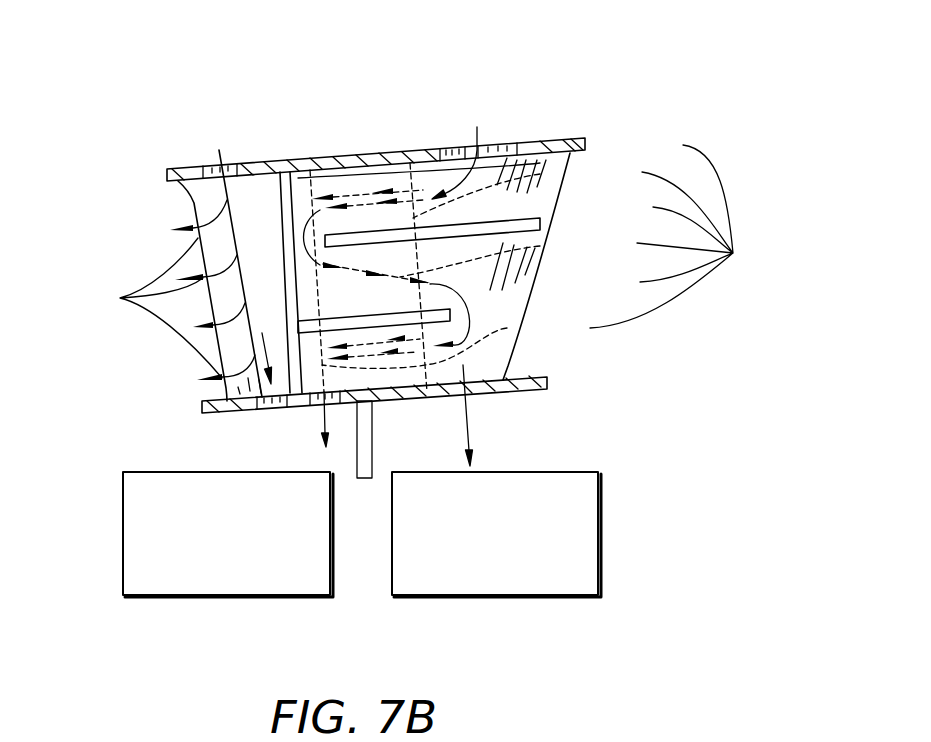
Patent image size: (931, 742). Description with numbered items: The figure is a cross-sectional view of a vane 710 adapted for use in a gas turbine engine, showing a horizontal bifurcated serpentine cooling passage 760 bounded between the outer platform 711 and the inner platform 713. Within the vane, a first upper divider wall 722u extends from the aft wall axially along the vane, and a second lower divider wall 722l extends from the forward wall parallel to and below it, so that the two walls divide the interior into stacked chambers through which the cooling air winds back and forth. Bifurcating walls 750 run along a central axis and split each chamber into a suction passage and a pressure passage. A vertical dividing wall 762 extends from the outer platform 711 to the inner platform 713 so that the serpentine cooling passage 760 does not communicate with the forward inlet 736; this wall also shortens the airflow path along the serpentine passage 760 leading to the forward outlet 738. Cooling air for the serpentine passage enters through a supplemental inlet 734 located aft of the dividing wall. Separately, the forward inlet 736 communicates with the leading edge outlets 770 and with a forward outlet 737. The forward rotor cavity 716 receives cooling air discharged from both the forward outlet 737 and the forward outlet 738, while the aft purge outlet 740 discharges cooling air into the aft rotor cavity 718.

The vane 710 is at (150, 104).
The outer platform 711 is at (548, 137).
The inner platform 713 is at (533, 392).
The forward rotor cavity 716 is at (123, 535).
The aft rotor cavity 718 is at (598, 535).
The first upper divider wall 722u is at (541, 226).
The second lower divider wall 722l is at (452, 311).
The supplemental inlet 734 is at (496, 126).
The forward inlet 736 is at (233, 141).
The forward outlet 737 is at (247, 421).
The forward outlet 738 is at (308, 429).
The aft purge outlet 740 is at (482, 406).
The bifurcating walls 750 is at (507, 328).
The bifurcated serpentine cooling passage 760 is at (693, 236).
The vertical dividing wall 762 is at (540, 163).
The leading edge outlets 770 is at (162, 290).